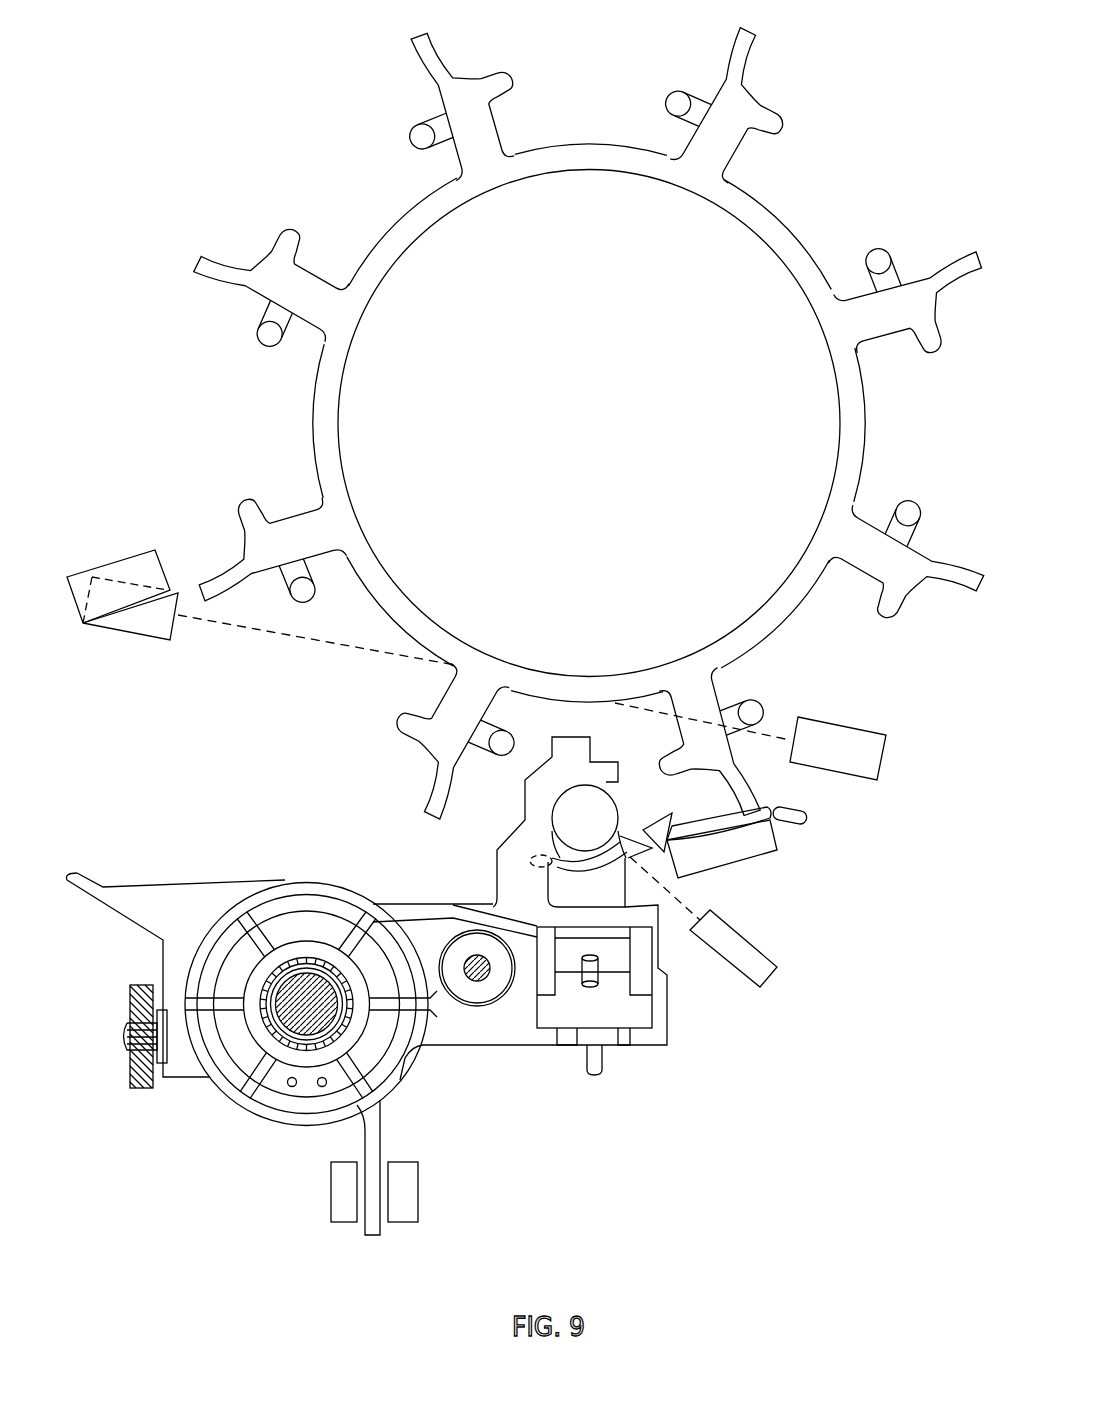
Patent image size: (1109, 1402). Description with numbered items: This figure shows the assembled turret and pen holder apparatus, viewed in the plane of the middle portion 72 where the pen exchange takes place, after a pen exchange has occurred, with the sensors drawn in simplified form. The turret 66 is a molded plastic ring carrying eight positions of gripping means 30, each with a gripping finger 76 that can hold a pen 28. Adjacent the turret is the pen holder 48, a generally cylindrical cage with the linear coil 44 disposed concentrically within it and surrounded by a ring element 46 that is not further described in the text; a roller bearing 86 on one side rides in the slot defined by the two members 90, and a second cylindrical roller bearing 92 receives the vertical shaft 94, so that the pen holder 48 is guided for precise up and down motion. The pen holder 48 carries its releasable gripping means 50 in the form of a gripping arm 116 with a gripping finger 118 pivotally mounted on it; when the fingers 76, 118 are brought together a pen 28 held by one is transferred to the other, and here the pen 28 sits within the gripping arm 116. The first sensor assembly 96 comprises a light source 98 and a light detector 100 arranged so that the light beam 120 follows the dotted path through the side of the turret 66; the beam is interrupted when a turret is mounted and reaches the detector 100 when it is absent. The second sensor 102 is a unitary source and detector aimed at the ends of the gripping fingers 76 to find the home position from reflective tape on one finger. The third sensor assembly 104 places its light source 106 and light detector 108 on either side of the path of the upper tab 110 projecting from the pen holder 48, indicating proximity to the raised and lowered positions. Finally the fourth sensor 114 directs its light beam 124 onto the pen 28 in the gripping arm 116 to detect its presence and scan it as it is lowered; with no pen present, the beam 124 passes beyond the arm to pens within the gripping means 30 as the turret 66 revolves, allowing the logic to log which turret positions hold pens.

The pen 28 is at (612, 808).
The gripping means 30 is at (953, 618).
The linear coil 44 is at (307, 1052).
The knurled ring 46 is at (263, 1033).
The pen holder 48 is at (288, 884).
The releasable gripping means 50 is at (634, 859).
The turret 66 is at (591, 472).
The middle portion 72 is at (794, 238).
The gripping finger 76 is at (730, 828).
The roller bearing 86 is at (135, 1037).
The members 90 is at (130, 998).
The second cylindrical roller bearing 92 is at (494, 988).
The shaft 94 is at (468, 980).
The first sensor assembly 96 is at (145, 605).
The light source 98 is at (130, 623).
The light detector 100 is at (835, 727).
The second sensor 102 is at (110, 560).
The third sensor assembly 104 is at (366, 1062).
The light source 106 is at (417, 1205).
The light detector 108 is at (335, 1207).
The upper tab 110 is at (375, 1145).
The fourth sensor 114 is at (770, 955).
The gripping arm 116 is at (533, 780).
The gripping finger 118 is at (625, 840).
The light beam 120 is at (336, 660).
The light beam 124 is at (676, 900).